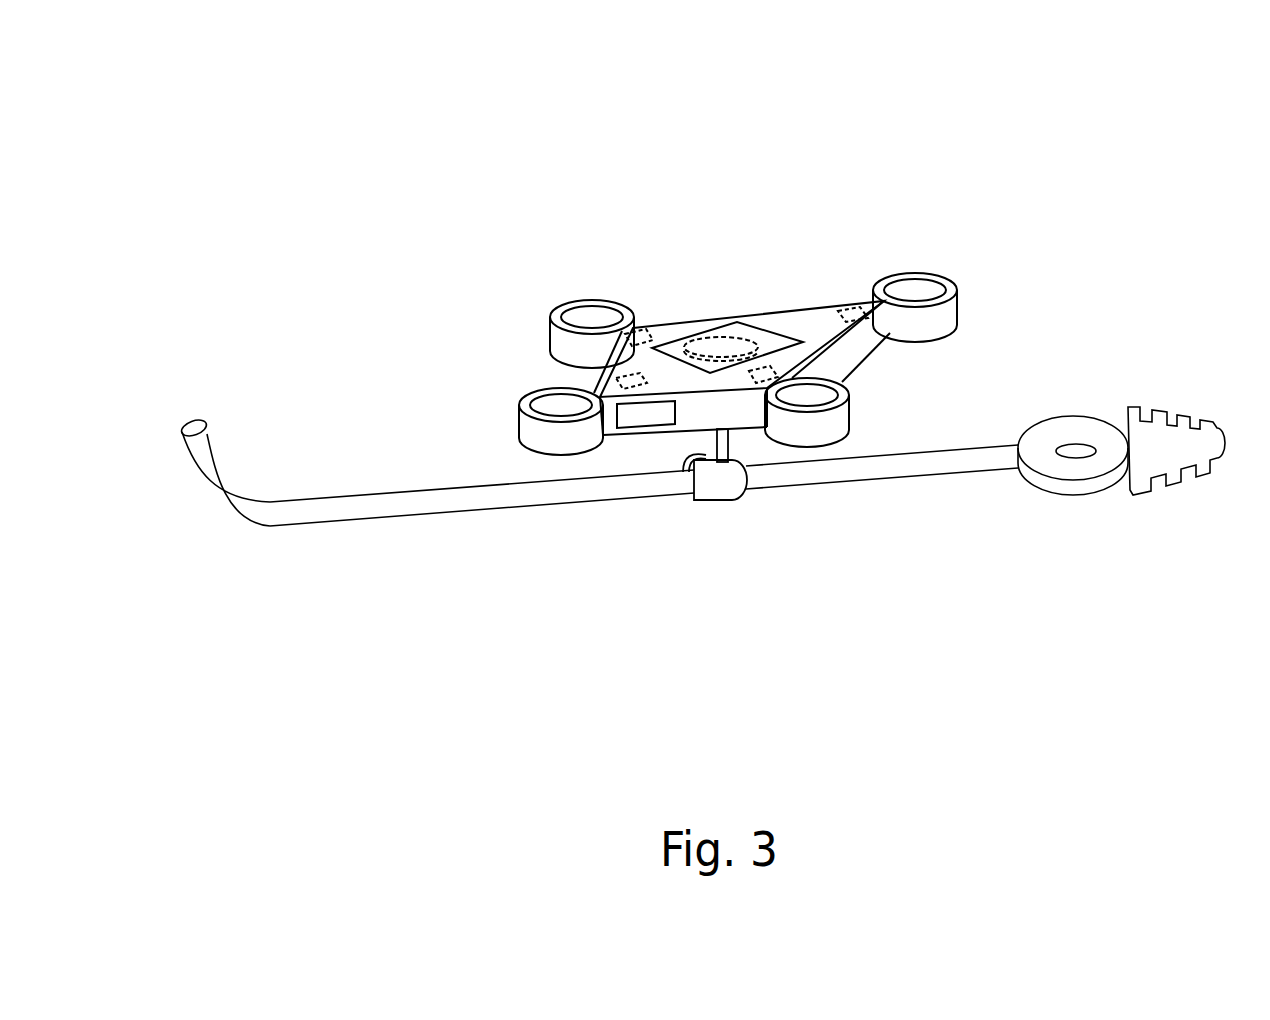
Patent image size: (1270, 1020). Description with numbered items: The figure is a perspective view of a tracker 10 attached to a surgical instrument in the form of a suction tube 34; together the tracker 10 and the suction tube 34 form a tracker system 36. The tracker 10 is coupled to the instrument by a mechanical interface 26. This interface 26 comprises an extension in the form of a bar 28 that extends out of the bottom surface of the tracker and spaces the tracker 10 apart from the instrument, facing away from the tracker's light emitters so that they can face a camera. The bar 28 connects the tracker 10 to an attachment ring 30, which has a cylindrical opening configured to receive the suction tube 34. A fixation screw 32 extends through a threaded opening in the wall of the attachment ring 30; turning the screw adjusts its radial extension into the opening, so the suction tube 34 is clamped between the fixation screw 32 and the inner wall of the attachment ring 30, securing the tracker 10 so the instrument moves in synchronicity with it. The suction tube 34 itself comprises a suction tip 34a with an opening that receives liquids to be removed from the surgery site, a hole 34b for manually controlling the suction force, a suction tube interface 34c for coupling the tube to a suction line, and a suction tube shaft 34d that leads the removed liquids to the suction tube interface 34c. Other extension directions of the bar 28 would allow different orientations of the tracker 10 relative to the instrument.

The tracker 10 is at (536, 252).
The mechanical interface 26 is at (740, 536).
The bar 28 is at (725, 434).
The attachment ring 30 is at (728, 493).
The fixation screw 32 is at (692, 464).
The suction tube 34 is at (407, 614).
The suction tip 34a is at (200, 424).
The hole 34b is at (1075, 456).
The suction tube interface 34c is at (1208, 461).
The suction tube shaft 34d is at (967, 447).
The tracker system 36 is at (1160, 121).